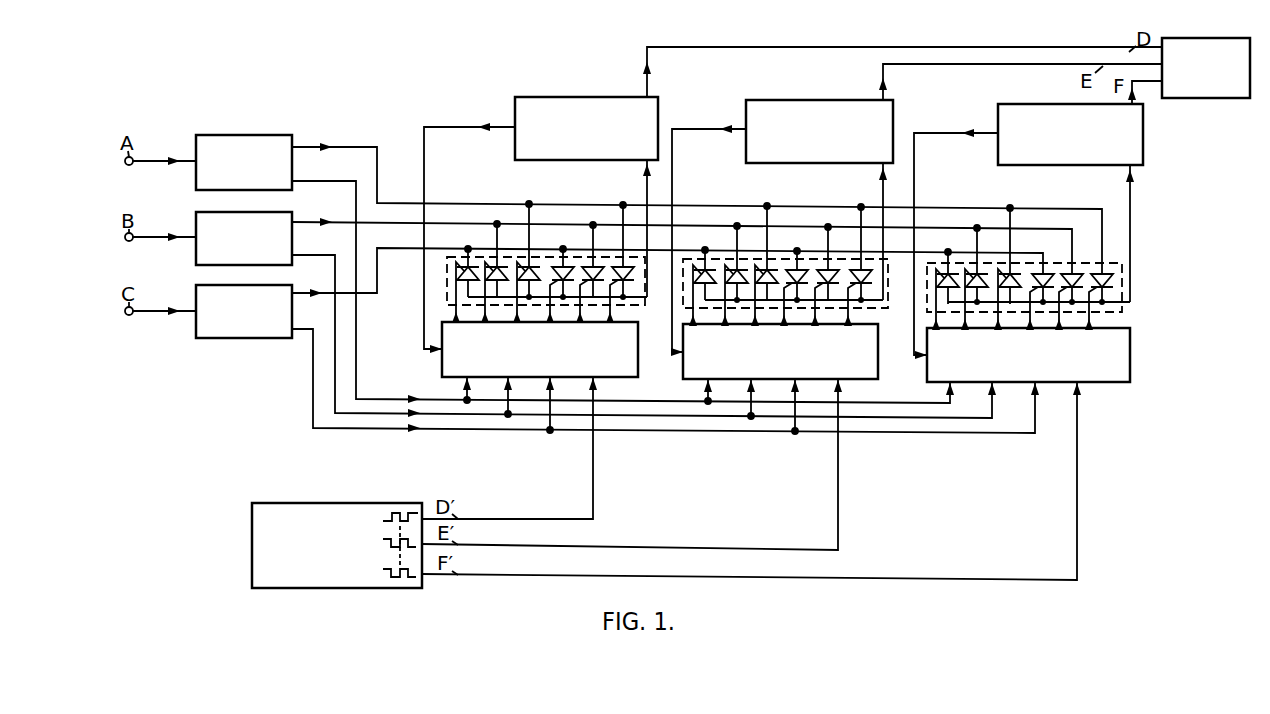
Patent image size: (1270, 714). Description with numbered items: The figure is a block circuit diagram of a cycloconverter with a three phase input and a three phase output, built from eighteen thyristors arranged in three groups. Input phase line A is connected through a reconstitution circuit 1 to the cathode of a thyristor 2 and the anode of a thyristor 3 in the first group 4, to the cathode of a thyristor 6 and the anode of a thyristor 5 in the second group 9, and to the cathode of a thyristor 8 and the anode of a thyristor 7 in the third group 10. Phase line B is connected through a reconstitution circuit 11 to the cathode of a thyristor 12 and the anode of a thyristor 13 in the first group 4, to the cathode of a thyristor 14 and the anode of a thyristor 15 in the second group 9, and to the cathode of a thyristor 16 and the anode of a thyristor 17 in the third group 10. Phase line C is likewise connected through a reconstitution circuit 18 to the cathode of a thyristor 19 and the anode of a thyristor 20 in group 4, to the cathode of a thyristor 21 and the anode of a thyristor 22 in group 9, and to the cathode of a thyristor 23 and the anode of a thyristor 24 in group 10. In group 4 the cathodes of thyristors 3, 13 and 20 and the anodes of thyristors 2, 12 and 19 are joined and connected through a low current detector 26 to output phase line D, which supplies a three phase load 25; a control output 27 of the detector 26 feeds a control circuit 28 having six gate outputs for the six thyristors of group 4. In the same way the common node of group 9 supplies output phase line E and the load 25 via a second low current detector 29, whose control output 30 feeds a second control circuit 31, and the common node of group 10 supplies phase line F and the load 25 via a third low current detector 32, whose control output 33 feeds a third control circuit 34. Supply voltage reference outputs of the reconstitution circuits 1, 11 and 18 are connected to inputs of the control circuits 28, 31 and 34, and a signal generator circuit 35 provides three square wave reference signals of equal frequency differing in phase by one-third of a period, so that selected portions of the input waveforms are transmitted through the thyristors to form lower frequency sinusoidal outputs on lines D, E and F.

The reconstitution circuit 1 is at (292, 137).
The reconstitution circuit 11 is at (293, 216).
The reconstitution circuit 18 is at (293, 291).
The low current detector 26 is at (611, 98).
The second low current detector 29 is at (862, 100).
The third low current detector 32 is at (1026, 104).
The control output 27 is at (448, 125).
The control output 30 is at (686, 127).
The control output 33 is at (978, 131).
The control circuit 28 is at (441, 378).
The second control circuit 31 is at (684, 380).
The third control circuit 34 is at (927, 382).
The first group 4 is at (645, 305).
The second group 9 is at (888, 308).
The third group 10 is at (1122, 312).
The thyristor 2 is at (531, 266).
The thyristor 3 is at (624, 267).
The thyristor 5 is at (860, 270).
The thyristor 6 is at (766, 268).
The thyristor 7 is at (1101, 274).
The thyristor 8 is at (1009, 272).
The thyristor 12 is at (500, 266).
The thyristor 13 is at (596, 267).
The thyristor 14 is at (736, 268).
The thyristor 15 is at (827, 270).
The thyristor 16 is at (976, 272).
The thyristor 17 is at (1071, 274).
The thyristor 19 is at (466, 266).
The thyristor 20 is at (565, 267).
The thyristor 21 is at (703, 268).
The thyristor 22 is at (798, 270).
The thyristor 23 is at (946, 272).
The thyristor 24 is at (1042, 274).
The three phase load 25 is at (1240, 99).
The signal generator circuit 35 is at (422, 588).